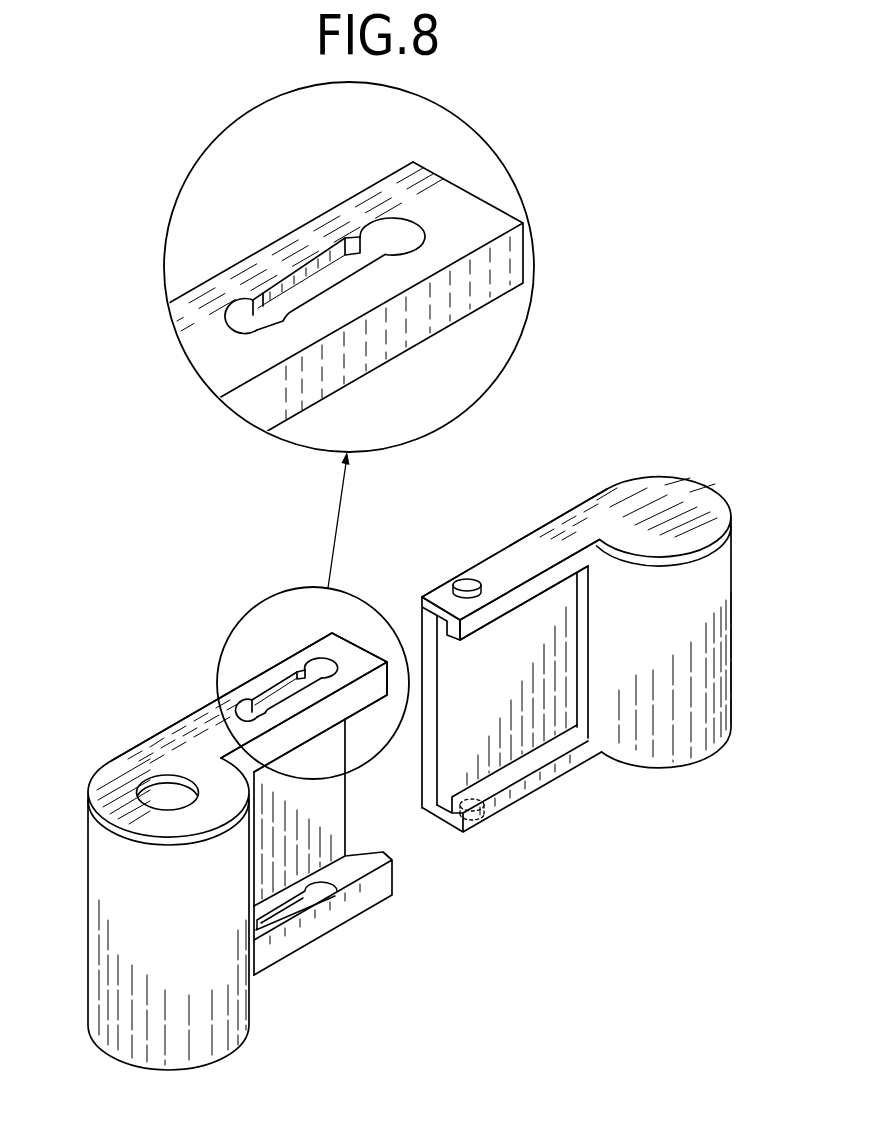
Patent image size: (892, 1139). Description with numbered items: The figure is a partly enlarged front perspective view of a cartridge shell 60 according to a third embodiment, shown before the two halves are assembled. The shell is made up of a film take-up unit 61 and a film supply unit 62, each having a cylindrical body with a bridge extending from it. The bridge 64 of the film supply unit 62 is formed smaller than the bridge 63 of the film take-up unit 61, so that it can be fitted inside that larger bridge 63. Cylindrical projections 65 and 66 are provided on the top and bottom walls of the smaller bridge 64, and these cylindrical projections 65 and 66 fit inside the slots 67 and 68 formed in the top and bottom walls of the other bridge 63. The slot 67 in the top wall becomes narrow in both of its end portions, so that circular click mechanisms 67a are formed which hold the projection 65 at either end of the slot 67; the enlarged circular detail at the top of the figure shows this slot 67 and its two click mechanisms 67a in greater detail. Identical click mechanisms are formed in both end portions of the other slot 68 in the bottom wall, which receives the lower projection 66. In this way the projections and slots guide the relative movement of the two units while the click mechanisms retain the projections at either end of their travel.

The cartridge shell 60 is at (486, 918).
The film take-up unit 61 is at (176, 710).
The film supply unit 62 is at (606, 476).
The bridge 63 is at (262, 681).
The bridge 64 is at (492, 568).
The cylindrical projection 65 is at (465, 578).
The cylindrical projection 66 is at (481, 831).
The slot 67 is at (302, 268).
The click mechanism 67a is at (252, 300).
The slot 68 is at (318, 903).